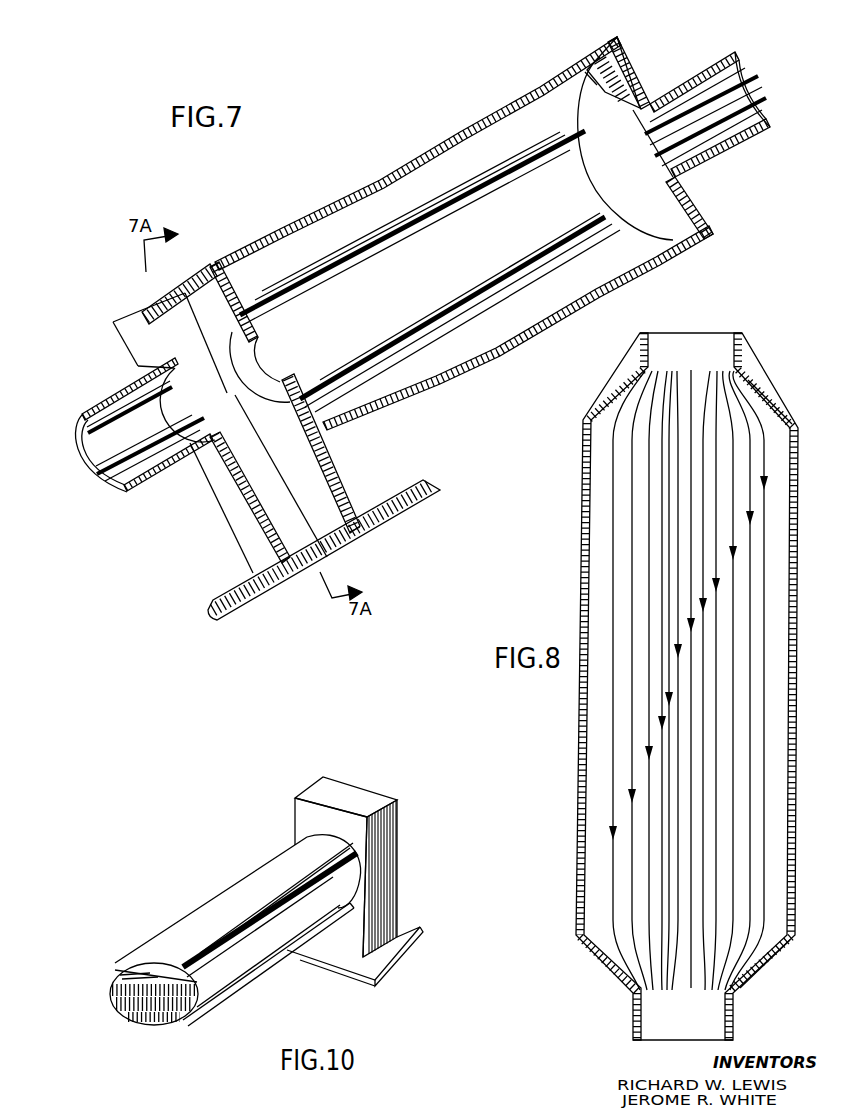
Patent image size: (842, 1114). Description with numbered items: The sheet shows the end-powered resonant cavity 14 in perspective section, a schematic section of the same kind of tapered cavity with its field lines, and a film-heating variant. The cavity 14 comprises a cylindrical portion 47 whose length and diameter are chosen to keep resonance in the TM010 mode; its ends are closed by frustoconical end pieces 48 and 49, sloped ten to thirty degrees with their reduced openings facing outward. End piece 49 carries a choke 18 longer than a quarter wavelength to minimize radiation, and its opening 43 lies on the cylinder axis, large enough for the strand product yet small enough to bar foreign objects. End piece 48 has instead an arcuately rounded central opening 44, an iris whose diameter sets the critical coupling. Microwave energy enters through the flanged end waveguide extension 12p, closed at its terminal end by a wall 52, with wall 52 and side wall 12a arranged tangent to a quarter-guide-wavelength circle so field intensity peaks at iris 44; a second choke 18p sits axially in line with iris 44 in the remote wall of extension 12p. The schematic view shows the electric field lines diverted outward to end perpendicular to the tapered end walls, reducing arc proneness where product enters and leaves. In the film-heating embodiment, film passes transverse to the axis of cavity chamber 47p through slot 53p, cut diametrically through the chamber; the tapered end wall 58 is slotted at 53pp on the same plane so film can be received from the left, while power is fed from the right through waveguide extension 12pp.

In FIG. 7, the resonant cavity 14 is at (354, 127).
In FIG. 7, the cylindrical portion 47 is at (522, 350).
In FIG. 8, the cylindrical portion 47 is at (581, 700).
In FIG. 7, the choke 18 is at (688, 85).
In FIG. 7, the opening 43 is at (608, 152).
In FIG. 7, the frustoconical end piece 49 is at (590, 78).
In FIG. 8, the frustoconical end piece 49 is at (765, 392).
In FIG. 7, the wall 52 is at (145, 302).
In FIG. 7, the side wall 12a is at (228, 419).
In FIG. 7, the central opening (iris) 44 is at (248, 362).
In FIG. 7, the flanged end waveguide extension 12p is at (345, 468).
In FIG. 7, the frustoconical end piece 48 is at (352, 424).
In FIG. 8, the frustoconical end piece 48 is at (760, 975).
In FIG. 7, the choke 18p is at (72, 450).
In FIG. 10, the waveguide extension 12pp is at (390, 870).
In FIG. 10, the cavity chamber 47p is at (237, 897).
In FIG. 10, the tapered end wall 58 is at (150, 956).
In FIG. 10, the slot 53p is at (273, 958).
In FIG. 10, the slot 53pp is at (168, 997).